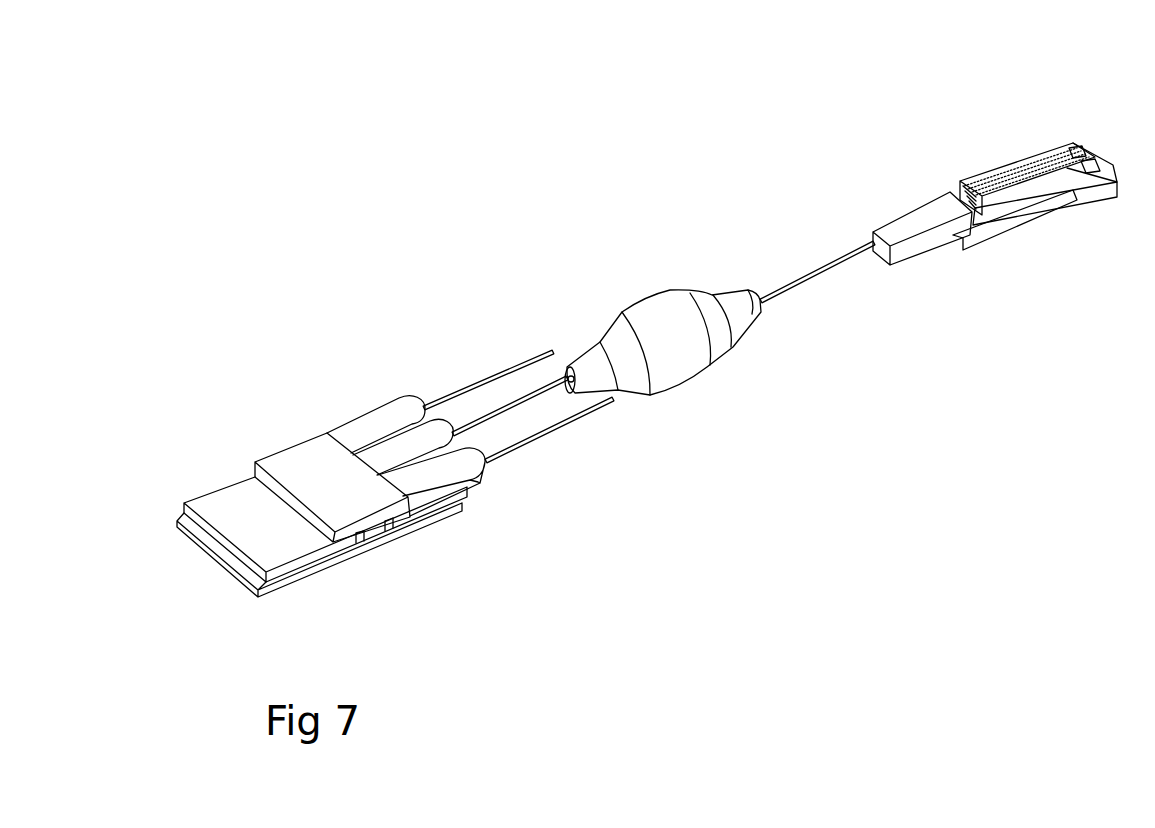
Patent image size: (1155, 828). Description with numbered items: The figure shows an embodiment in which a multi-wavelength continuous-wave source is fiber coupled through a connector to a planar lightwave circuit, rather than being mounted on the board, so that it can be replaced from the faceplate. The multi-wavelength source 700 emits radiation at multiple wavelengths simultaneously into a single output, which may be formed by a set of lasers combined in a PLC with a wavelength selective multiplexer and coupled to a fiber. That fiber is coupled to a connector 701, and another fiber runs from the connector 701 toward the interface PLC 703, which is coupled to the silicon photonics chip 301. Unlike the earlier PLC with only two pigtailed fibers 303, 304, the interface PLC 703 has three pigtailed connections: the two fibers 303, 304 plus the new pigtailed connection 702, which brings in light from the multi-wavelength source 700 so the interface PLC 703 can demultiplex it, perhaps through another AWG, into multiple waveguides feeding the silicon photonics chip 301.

The multi-wavelength source 700 is at (984, 168).
The connector 701 is at (645, 293).
The pigtailed connection 702 is at (430, 430).
The pigtailed fiber 303 is at (363, 417).
The interface PLC 703 is at (332, 487).
The silicon photonics chip 301 is at (322, 537).
The pigtailed fiber 304 is at (443, 497).